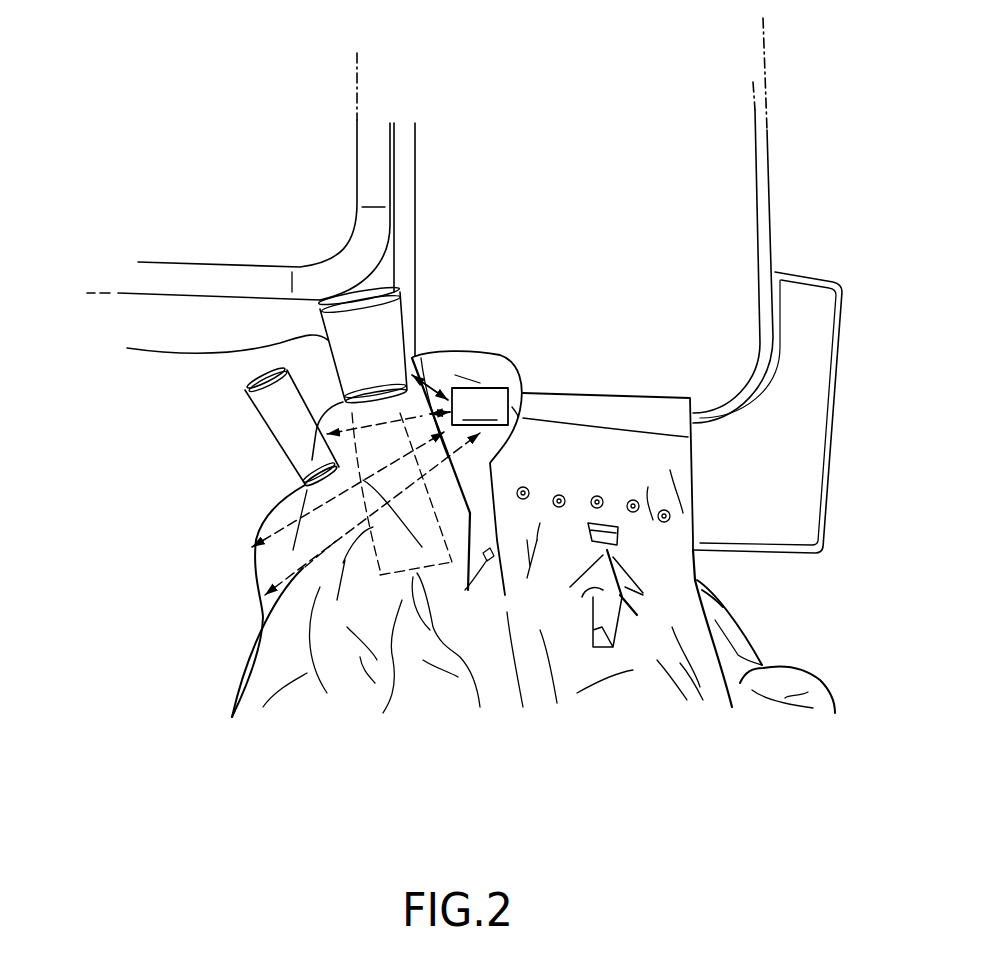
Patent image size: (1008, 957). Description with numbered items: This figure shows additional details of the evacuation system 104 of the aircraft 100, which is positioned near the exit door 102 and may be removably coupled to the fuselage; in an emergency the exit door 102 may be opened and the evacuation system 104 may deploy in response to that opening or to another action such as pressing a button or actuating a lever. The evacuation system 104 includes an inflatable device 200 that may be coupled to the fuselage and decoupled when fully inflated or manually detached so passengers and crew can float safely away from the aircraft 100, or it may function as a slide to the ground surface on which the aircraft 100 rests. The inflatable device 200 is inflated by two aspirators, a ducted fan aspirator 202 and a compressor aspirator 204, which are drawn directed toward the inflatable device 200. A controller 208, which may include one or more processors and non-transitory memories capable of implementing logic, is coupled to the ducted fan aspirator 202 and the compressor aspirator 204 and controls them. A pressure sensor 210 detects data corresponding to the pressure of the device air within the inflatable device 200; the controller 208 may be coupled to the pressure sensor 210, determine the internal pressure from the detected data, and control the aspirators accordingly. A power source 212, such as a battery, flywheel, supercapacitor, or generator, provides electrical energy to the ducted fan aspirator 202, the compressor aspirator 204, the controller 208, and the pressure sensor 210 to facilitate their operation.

The aircraft 100 is at (264, 94).
The exit door 102 is at (770, 143).
The evacuation system 104 is at (168, 484).
The inflatable device 200 is at (497, 688).
The ducted fan aspirator 202 is at (393, 340).
The compressor aspirator 204 is at (253, 402).
The controller 208 is at (256, 551).
The pressure sensor 210 is at (263, 602).
The power source 212 is at (417, 404).